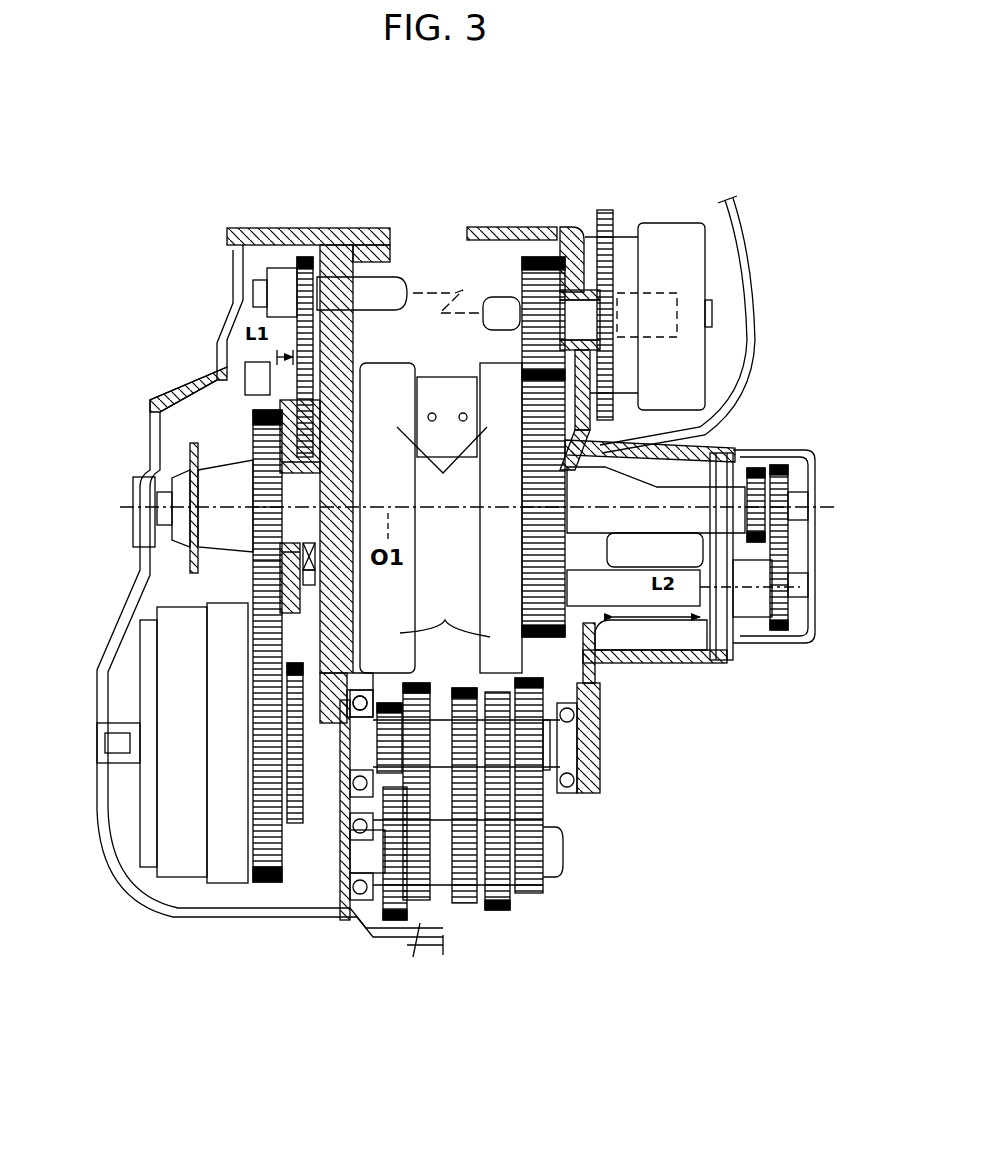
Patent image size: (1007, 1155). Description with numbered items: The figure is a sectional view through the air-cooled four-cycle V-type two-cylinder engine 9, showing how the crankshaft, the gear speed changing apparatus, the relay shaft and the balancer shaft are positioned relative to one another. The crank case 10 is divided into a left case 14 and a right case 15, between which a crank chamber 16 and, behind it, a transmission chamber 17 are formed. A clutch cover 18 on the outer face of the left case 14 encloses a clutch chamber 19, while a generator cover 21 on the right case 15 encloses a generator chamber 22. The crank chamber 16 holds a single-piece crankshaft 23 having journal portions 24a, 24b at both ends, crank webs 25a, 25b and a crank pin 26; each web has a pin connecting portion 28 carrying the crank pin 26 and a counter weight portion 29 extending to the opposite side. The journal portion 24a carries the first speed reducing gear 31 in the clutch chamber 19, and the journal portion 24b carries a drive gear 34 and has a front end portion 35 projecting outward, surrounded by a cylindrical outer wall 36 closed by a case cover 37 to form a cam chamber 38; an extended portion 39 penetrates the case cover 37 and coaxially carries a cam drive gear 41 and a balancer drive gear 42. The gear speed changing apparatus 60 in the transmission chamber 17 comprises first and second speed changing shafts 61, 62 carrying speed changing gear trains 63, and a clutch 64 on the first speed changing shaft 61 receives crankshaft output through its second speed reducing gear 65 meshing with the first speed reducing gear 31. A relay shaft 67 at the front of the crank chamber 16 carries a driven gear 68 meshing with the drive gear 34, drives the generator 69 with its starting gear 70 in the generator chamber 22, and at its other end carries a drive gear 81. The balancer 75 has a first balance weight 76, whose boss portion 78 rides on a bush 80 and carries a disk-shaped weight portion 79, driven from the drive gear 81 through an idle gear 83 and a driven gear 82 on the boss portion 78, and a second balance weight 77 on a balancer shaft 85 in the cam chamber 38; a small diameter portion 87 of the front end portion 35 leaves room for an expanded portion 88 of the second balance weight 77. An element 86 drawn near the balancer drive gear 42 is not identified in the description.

The engine 9 is at (650, 128).
The crank case 10 is at (565, 240).
The left case 14 is at (350, 228).
The right case 15 is at (487, 228).
The crank chamber 16 is at (447, 550).
The transmission chamber 17 is at (422, 956).
The clutch cover 18 is at (175, 395).
The clutch chamber 19 is at (150, 578).
The generator cover 21 is at (748, 283).
The generator chamber 22 is at (735, 372).
The crankshaft 23 is at (430, 372).
The journal portion 24a is at (340, 494).
The journal portion 24b is at (570, 485).
The crank web 25a is at (380, 385).
The crank web 25b is at (500, 380).
The crank pin 26 is at (455, 395).
The pin connecting portion 28 is at (442, 466).
The counter weight portion 29 is at (445, 615).
The first speed reducing gear 31 is at (253, 420).
The drive gear 34 is at (545, 625).
The front end portion 35 is at (715, 452).
The outer wall 36 is at (663, 657).
The case cover 37 is at (743, 648).
The cam chamber 38 is at (598, 665).
The extended portion 39 is at (760, 465).
The cam drive gear 41 is at (718, 518).
The balancer drive gear 42 is at (790, 456).
The gear speed changing apparatus 60 is at (548, 812).
The first speed changing shaft 61 is at (340, 750).
The second speed changing shaft 62 is at (565, 862).
The speed changing gear trains 63 is at (407, 905).
The clutch 64 is at (223, 875).
The second speed reducing gear 65 is at (272, 885).
The relay shaft 67 is at (392, 290).
The driven gear 68 is at (538, 257).
The generator 69 is at (665, 228).
The starting gear 70 is at (605, 212).
The balancer 75 is at (690, 660).
The first balance weight 76 is at (250, 565).
The second balance weight 77 is at (640, 556).
The boss portion 78 is at (305, 545).
The weight portion 79 is at (293, 725).
The bush 80 is at (258, 535).
The drive gear 81 is at (300, 257).
The driven gear 82 is at (312, 580).
The idle gear 83 is at (307, 407).
The balancer shaft 85 is at (525, 580).
The gear 86 is at (783, 632).
The small diameter portion 87 is at (652, 478).
The expanded portion 88 is at (645, 650).